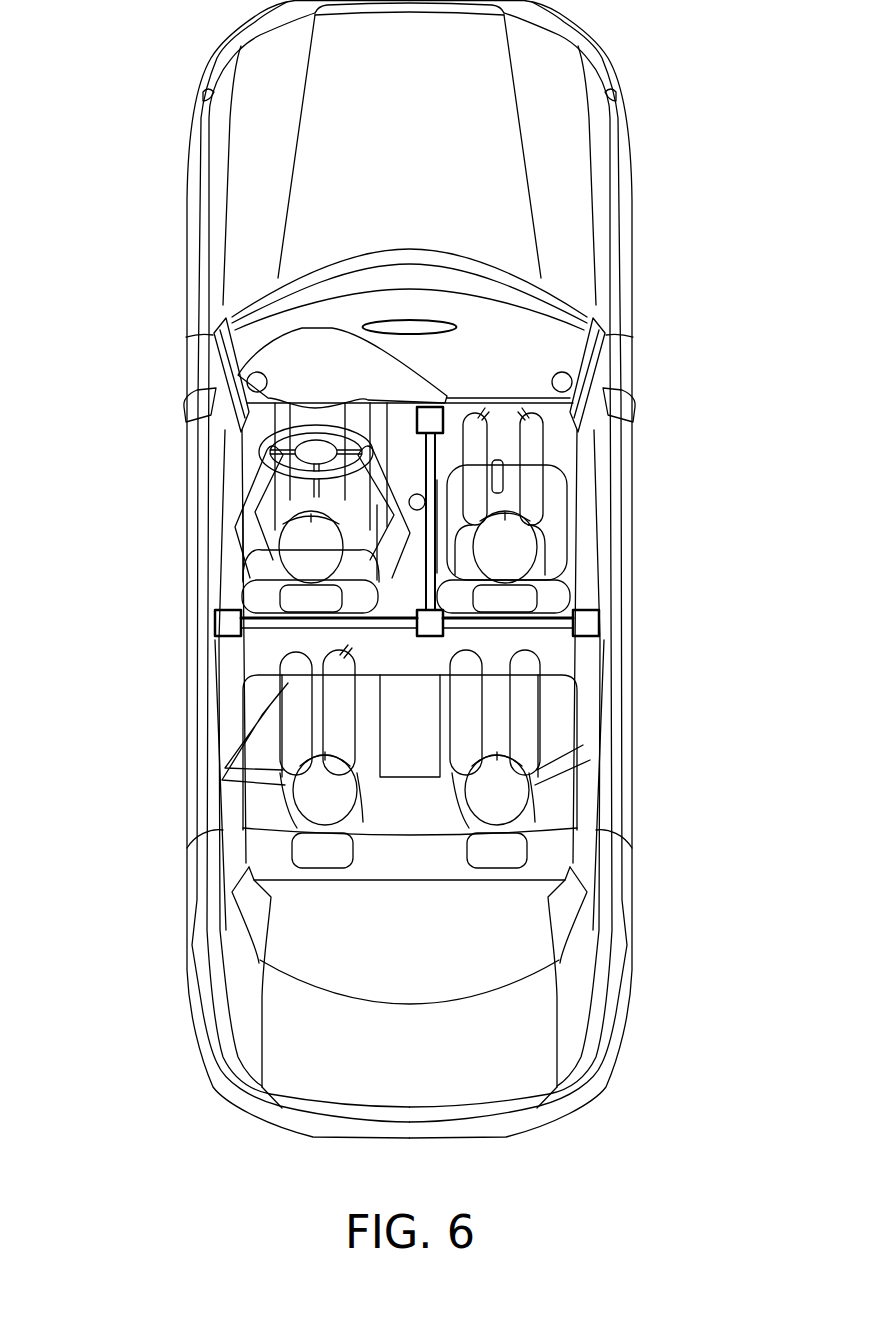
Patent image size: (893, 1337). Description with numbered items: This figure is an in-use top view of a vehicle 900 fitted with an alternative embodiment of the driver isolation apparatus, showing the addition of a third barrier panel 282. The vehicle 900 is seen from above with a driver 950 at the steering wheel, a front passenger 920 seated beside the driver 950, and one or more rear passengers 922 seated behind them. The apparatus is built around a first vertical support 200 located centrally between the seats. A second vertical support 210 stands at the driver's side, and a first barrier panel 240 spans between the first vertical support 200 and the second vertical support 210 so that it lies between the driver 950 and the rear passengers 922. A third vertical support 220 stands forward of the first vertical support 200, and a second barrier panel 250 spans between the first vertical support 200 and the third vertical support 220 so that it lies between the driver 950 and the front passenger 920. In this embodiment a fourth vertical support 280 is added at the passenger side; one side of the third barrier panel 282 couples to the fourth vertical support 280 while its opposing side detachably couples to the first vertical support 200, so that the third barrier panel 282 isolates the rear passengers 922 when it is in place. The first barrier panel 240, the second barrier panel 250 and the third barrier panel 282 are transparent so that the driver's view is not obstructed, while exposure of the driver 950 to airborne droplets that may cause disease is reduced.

The vehicle 900 is at (595, 148).
The driver 950 is at (293, 553).
The front passenger 920 is at (533, 507).
The rear passengers 922 is at (493, 790).
The third vertical support 220 is at (432, 420).
The second barrier panel 250 is at (427, 493).
The second vertical support 210 is at (215, 618).
The first barrier panel 240 is at (287, 630).
The first vertical support 200 is at (430, 628).
The third barrier panel 282 is at (510, 630).
The fourth vertical support 280 is at (599, 623).